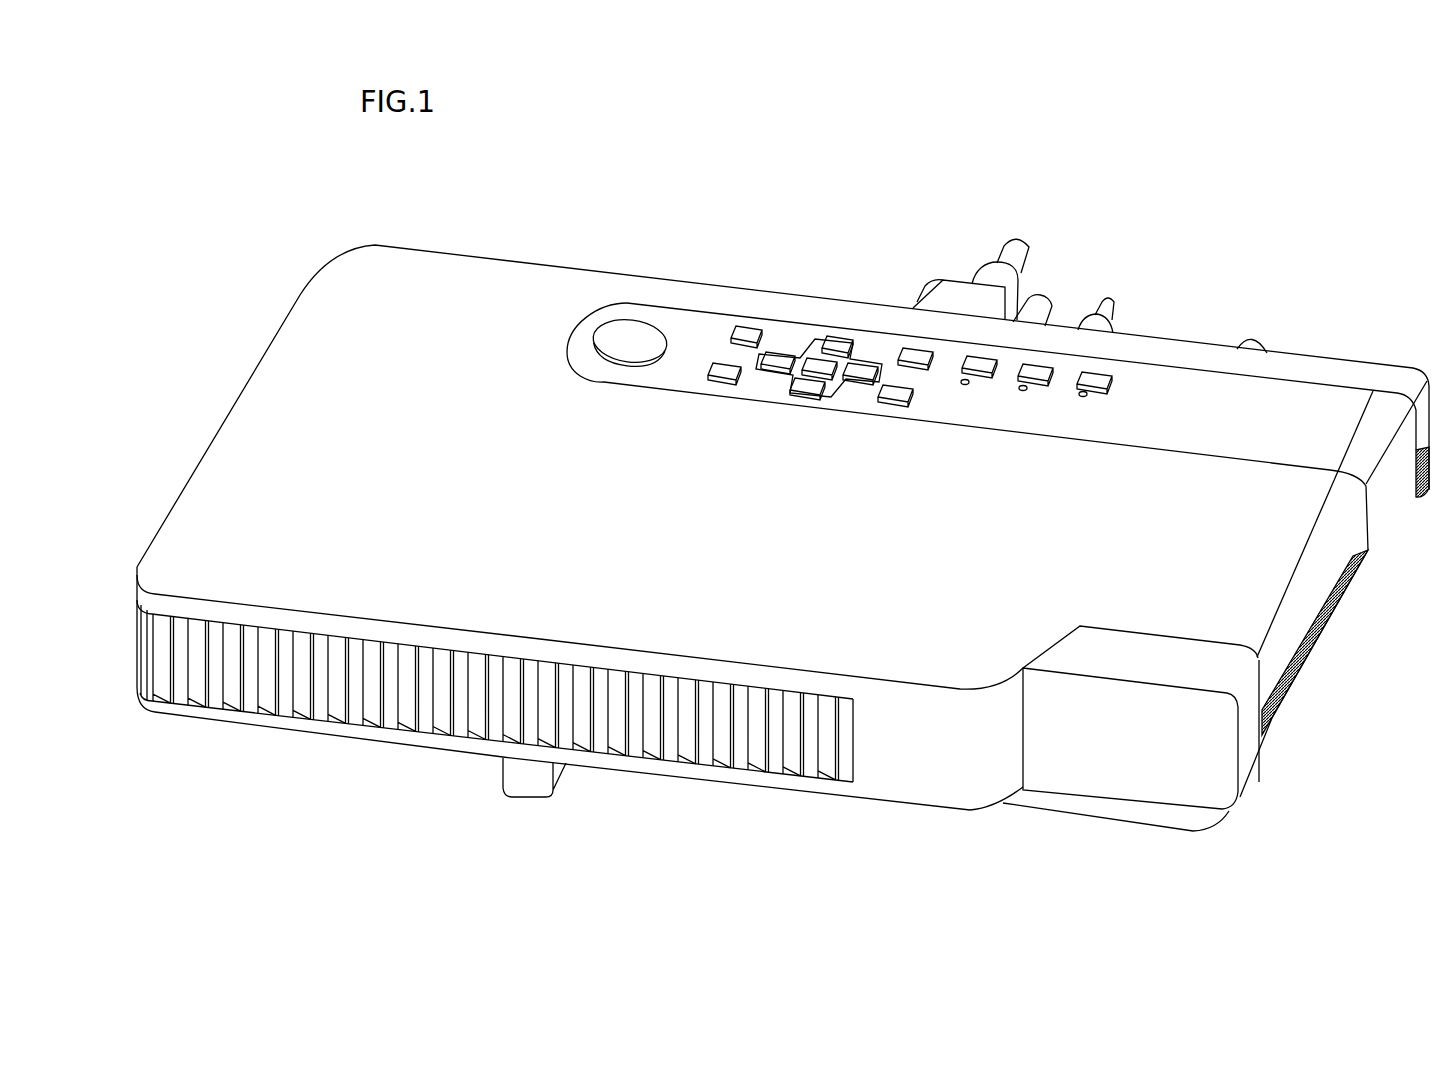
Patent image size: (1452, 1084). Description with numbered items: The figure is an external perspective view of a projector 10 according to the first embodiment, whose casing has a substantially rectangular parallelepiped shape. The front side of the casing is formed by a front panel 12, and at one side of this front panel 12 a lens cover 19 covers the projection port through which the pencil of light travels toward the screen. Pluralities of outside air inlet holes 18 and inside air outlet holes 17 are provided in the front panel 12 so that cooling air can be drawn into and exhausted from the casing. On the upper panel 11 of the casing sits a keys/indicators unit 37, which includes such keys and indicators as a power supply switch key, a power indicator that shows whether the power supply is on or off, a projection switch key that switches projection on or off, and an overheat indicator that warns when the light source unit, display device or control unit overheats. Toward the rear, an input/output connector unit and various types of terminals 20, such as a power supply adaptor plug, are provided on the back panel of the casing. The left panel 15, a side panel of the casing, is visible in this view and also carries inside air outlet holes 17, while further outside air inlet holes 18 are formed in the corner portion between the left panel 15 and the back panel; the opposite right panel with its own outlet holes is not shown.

The projector 10 is at (746, 188).
The upper panel 11 is at (525, 278).
The front panel 12 is at (903, 765).
The left panel 15 is at (1320, 590).
The inside air outlet holes 17 is at (365, 700).
The outside air inlet holes 18 is at (1420, 498).
The lens cover 19 is at (1175, 773).
The terminals 20 is at (1066, 234).
The keys/indicators unit 37 is at (838, 282).